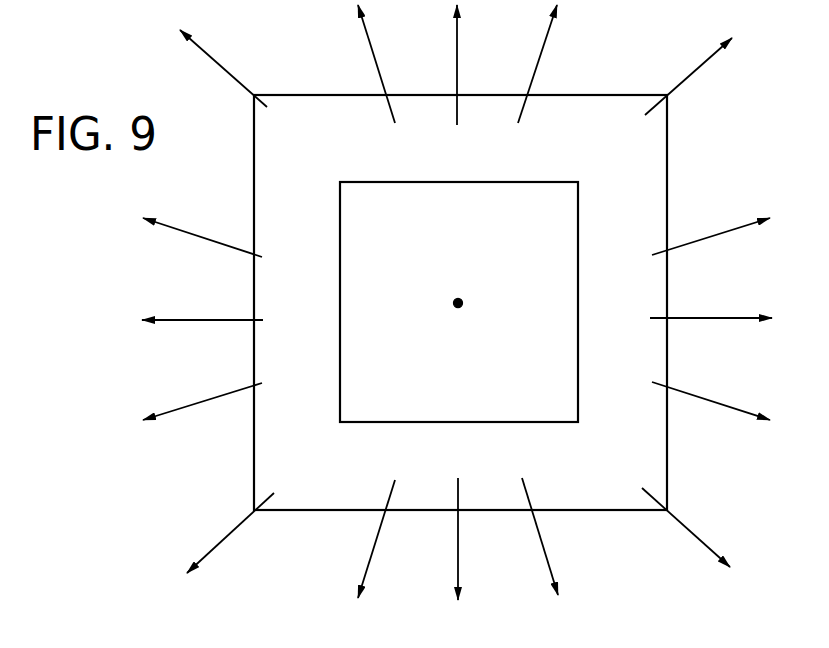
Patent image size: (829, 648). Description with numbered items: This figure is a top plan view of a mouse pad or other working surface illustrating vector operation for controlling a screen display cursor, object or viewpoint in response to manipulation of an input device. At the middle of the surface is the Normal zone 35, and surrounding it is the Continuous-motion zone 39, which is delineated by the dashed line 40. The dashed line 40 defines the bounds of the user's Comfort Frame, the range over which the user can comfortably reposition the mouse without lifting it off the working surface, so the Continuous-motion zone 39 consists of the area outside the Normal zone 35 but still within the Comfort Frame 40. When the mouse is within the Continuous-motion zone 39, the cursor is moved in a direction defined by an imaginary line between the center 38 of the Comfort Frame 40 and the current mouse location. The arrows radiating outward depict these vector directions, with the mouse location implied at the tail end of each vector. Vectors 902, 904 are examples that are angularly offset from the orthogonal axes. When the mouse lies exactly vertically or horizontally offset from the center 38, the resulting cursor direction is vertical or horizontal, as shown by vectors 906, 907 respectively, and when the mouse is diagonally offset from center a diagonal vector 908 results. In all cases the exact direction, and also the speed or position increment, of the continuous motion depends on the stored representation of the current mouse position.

The Normal zone 35 is at (508, 268).
The center of the Comfort Frame 38 is at (458, 303).
The Continuous-motion zone 39 is at (287, 212).
The dashed line 40 is at (285, 513).
The vector 902 is at (202, 238).
The vector 904 is at (202, 398).
The vector 906 is at (457, 60).
The vector 907 is at (715, 317).
The diagonal vector 908 is at (700, 68).